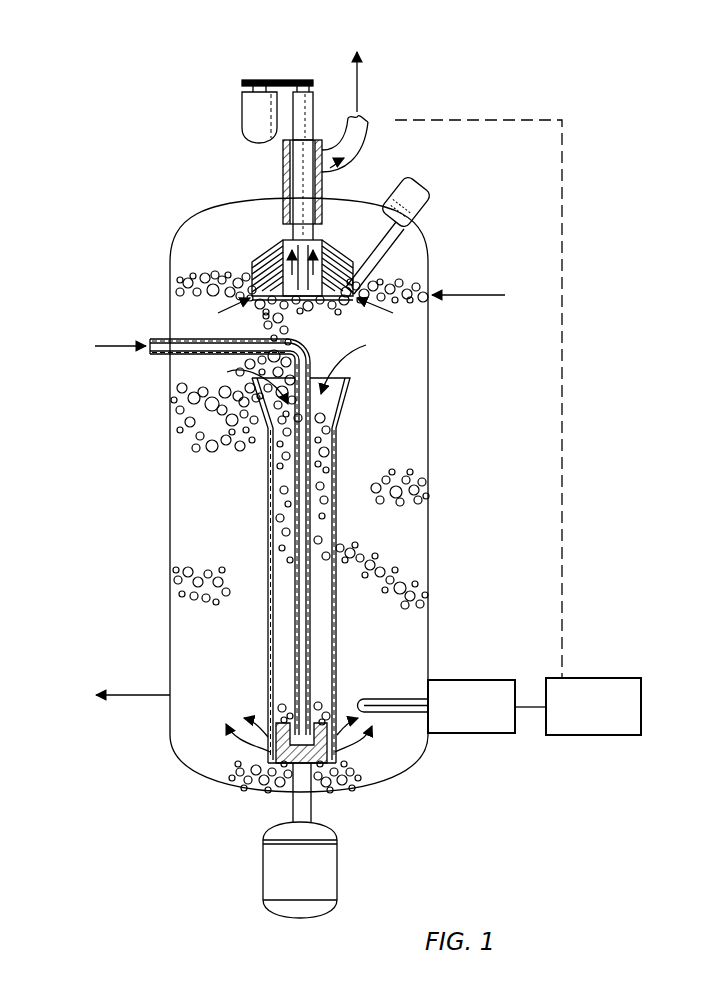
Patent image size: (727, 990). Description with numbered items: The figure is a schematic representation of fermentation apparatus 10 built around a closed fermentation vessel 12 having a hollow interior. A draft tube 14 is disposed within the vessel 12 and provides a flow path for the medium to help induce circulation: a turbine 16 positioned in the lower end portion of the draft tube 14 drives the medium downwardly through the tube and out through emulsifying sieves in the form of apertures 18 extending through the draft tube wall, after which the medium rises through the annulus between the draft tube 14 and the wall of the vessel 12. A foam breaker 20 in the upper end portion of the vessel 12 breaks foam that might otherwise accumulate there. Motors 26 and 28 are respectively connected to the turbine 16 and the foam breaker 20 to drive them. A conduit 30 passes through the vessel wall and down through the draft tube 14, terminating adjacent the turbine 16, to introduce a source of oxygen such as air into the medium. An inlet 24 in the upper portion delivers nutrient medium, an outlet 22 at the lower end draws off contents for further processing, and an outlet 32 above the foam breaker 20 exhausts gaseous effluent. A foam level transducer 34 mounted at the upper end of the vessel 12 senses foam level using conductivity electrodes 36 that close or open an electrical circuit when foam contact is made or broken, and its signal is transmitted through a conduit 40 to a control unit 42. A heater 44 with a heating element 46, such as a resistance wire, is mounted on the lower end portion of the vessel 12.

The fermentation apparatus 10 is at (158, 178).
The fermentation vessel 12 is at (170, 478).
The draft tube 14 is at (268, 552).
The turbine 16 is at (292, 722).
The apertures 18 is at (212, 745).
The foam breaker 20 is at (254, 266).
The outlet 22 is at (143, 694).
The inlet 24 is at (478, 295).
The motor 26 is at (337, 882).
The motor 28 is at (242, 106).
The conduit 30 is at (151, 339).
The outlet 32 is at (368, 124).
The foam level transducer 34 is at (427, 204).
The conductivity electrodes 36 is at (360, 280).
The conduit 40 is at (562, 358).
The control unit 42 is at (606, 678).
The heater 44 is at (470, 680).
The heating element 46 is at (392, 699).